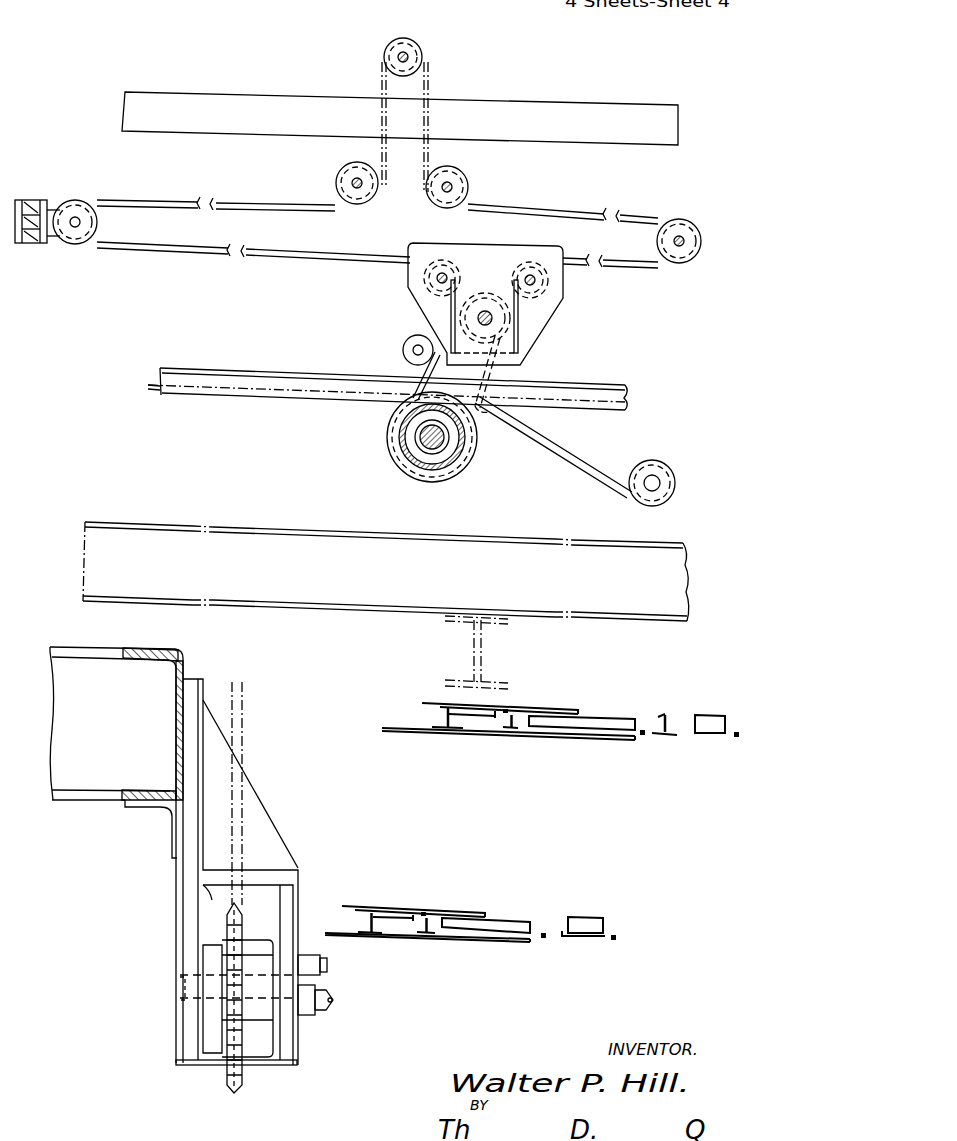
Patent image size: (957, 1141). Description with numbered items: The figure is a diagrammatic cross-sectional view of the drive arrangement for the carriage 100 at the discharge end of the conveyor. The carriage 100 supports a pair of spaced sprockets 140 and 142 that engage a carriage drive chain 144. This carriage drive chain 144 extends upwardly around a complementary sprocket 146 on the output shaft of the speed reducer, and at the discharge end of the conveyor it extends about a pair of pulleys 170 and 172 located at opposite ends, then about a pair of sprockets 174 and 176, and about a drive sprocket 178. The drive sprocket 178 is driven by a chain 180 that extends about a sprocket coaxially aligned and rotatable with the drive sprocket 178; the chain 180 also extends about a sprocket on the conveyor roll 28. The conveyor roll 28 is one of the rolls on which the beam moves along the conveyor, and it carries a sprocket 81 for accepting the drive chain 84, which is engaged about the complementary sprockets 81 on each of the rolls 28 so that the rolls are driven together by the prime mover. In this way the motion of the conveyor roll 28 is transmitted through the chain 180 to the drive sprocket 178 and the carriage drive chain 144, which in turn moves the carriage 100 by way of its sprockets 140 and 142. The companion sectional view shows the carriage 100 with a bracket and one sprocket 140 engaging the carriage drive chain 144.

In FIG. 10, the carriage 100 is at (564, 104).
In FIG. 9, the carriage 100 is at (186, 658).
In FIG. 10, the complementary sprocket 146 is at (413, 50).
In FIG. 10, the sprocket 140 is at (335, 180).
In FIG. 9, the sprocket 140 is at (244, 1076).
In FIG. 10, the sprocket 142 is at (468, 180).
In FIG. 10, the pulley 172 is at (678, 219).
In FIG. 10, the pulley 170 is at (78, 200).
In FIG. 10, the carriage drive chain 144 is at (345, 258).
In FIG. 9, the carriage drive chain 144 is at (243, 838).
In FIG. 10, the sprocket 174 is at (412, 306).
In FIG. 10, the sprocket 176 is at (560, 288).
In FIG. 10, the drive sprocket 178 is at (505, 330).
In FIG. 10, the chain 180 is at (490, 415).
In FIG. 10, the sprocket 81 is at (392, 430).
In FIG. 10, the roll 28 is at (405, 456).
In FIG. 10, the chain 84 is at (540, 455).